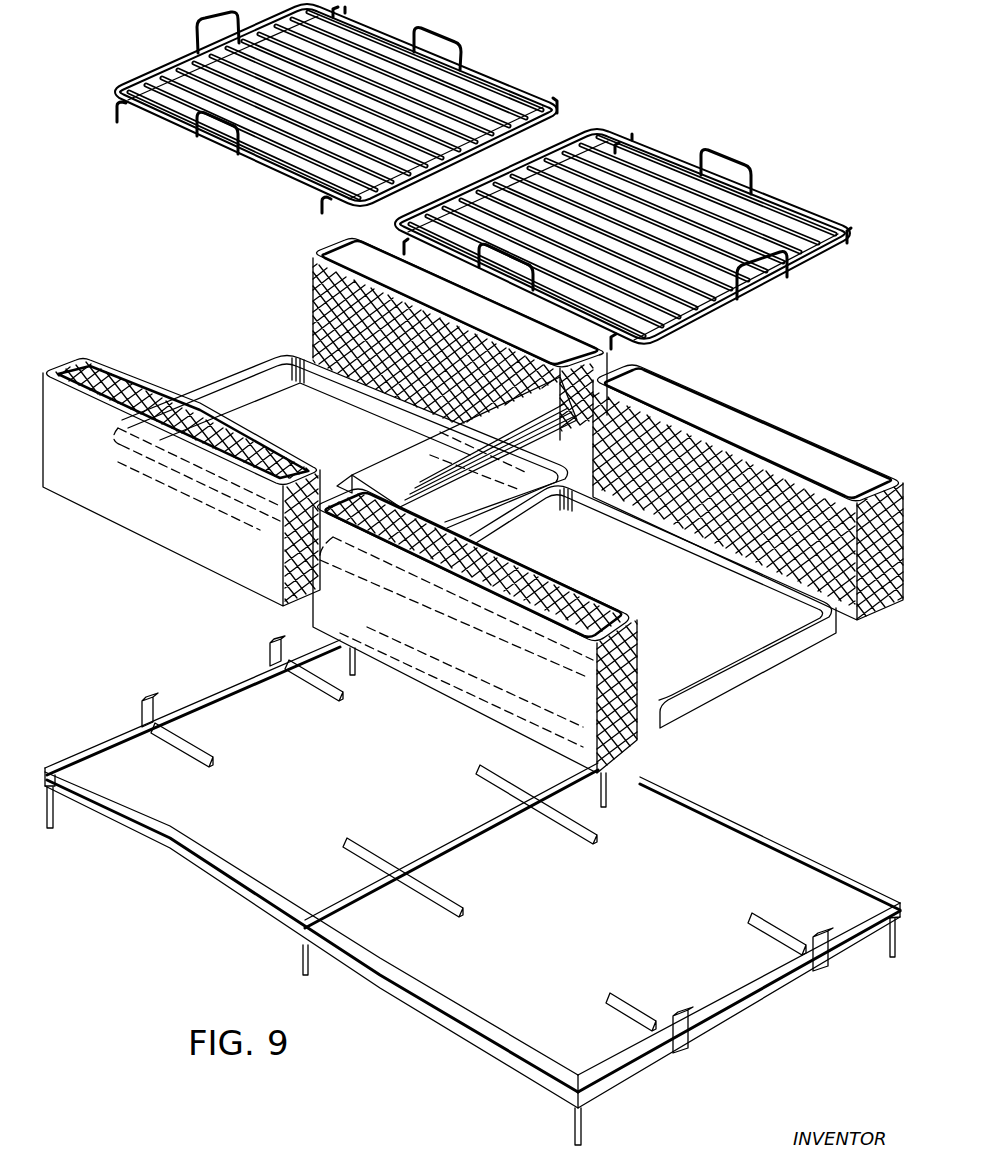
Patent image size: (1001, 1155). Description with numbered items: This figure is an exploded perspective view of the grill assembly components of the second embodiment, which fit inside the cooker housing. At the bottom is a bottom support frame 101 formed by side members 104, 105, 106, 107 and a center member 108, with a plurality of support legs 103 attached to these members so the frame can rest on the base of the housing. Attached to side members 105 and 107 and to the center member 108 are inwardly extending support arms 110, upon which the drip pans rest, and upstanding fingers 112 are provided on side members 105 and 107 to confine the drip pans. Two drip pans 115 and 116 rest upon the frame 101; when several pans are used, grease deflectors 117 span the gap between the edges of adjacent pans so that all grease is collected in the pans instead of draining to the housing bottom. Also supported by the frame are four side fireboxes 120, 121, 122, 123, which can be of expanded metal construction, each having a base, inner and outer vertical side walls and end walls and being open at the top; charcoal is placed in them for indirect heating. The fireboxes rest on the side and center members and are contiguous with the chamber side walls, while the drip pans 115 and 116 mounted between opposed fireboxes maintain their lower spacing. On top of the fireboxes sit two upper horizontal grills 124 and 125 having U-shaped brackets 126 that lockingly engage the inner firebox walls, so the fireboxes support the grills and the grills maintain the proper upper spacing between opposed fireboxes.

The bottom support frame 101 is at (472, 886).
The support legs 103 is at (50, 830).
The side member 104 is at (445, 995).
The side member 105 is at (635, 1075).
The side member 106 is at (757, 833).
The side member 107 is at (120, 738).
The center member 108 is at (458, 853).
The support arms 110 is at (208, 752).
The upstanding fingers 112 is at (276, 640).
The drip pan 115 is at (755, 672).
The drip pan 116 is at (270, 372).
The grease deflector 117 is at (397, 460).
The side firebox 120 is at (645, 635).
The side firebox 121 is at (778, 440).
The side firebox 122 is at (312, 287).
The side firebox 123 is at (114, 362).
The upper horizontal grill 124 is at (493, 97).
The upper horizontal grill 125 is at (778, 200).
The U-shaped brackets 126 is at (556, 97).